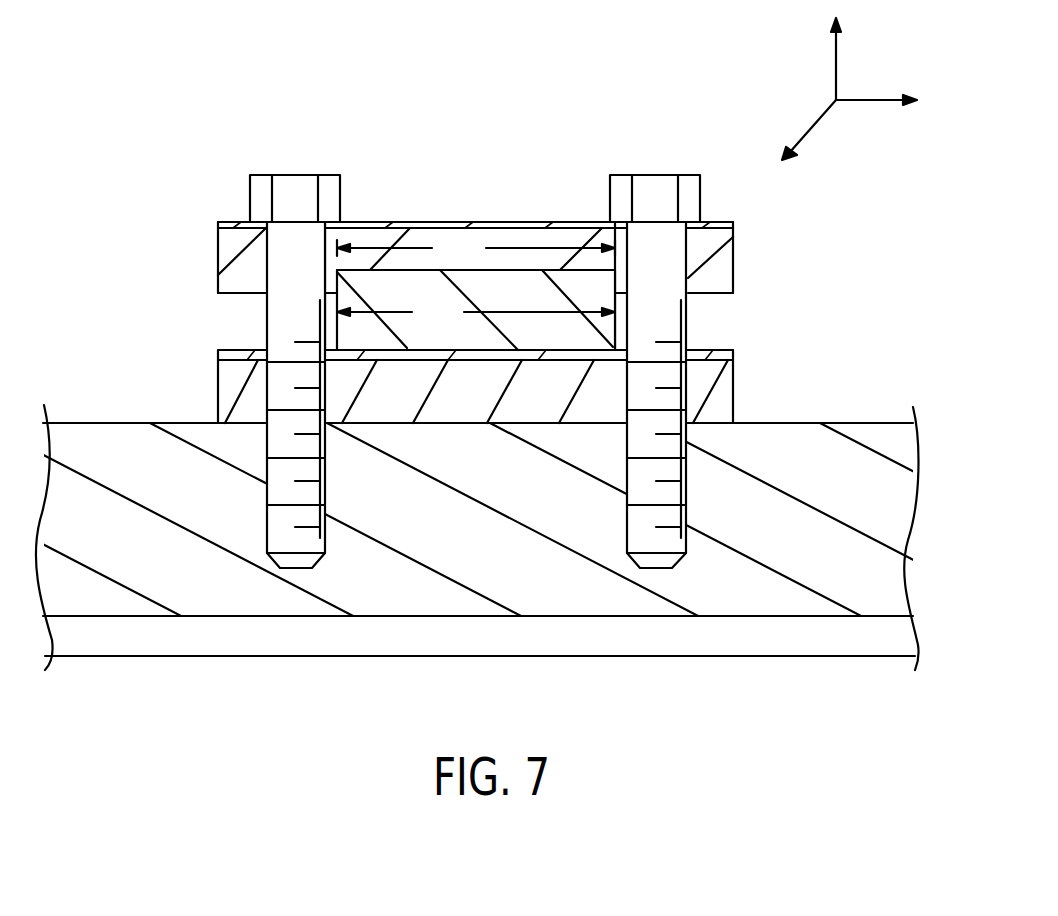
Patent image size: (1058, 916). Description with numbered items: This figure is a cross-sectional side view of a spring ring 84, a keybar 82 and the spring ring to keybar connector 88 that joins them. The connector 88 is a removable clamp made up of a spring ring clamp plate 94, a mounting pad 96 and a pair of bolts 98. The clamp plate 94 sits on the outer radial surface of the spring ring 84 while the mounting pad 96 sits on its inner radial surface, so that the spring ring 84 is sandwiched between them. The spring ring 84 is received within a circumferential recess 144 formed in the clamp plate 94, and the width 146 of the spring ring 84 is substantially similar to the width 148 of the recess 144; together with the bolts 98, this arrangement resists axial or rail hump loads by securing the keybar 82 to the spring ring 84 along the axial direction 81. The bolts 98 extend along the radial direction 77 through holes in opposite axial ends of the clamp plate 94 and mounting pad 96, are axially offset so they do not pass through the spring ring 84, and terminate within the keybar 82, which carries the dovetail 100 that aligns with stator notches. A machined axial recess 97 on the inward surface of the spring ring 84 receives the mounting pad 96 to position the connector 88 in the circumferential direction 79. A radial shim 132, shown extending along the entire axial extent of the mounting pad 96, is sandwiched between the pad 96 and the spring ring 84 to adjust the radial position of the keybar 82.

The radial direction 77 is at (836, 65).
The circumferential direction 79 is at (815, 124).
The axial direction 81 is at (870, 101).
The keybar 82 is at (858, 422).
The spring ring 84 is at (350, 328).
The spring ring to keybar connector 88 is at (490, 122).
The spring ring clamp plate 94 is at (217, 252).
The mounting pad 96 is at (737, 382).
The machined axial recess 97 is at (470, 353).
The bolts 98 is at (296, 175).
The dovetail 100 is at (757, 637).
The radial shim 132 is at (715, 348).
The circumferential recess 144 is at (392, 275).
The width of the spring ring 146 is at (476, 311).
The width of the recess 148 is at (476, 247).